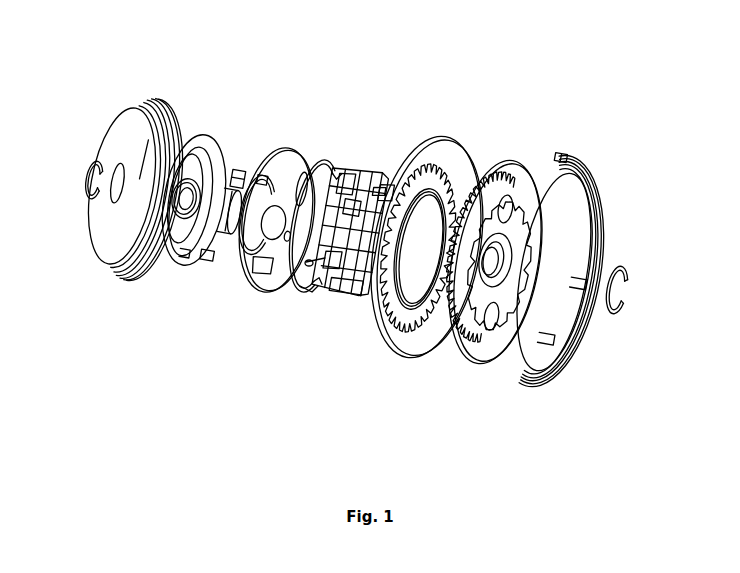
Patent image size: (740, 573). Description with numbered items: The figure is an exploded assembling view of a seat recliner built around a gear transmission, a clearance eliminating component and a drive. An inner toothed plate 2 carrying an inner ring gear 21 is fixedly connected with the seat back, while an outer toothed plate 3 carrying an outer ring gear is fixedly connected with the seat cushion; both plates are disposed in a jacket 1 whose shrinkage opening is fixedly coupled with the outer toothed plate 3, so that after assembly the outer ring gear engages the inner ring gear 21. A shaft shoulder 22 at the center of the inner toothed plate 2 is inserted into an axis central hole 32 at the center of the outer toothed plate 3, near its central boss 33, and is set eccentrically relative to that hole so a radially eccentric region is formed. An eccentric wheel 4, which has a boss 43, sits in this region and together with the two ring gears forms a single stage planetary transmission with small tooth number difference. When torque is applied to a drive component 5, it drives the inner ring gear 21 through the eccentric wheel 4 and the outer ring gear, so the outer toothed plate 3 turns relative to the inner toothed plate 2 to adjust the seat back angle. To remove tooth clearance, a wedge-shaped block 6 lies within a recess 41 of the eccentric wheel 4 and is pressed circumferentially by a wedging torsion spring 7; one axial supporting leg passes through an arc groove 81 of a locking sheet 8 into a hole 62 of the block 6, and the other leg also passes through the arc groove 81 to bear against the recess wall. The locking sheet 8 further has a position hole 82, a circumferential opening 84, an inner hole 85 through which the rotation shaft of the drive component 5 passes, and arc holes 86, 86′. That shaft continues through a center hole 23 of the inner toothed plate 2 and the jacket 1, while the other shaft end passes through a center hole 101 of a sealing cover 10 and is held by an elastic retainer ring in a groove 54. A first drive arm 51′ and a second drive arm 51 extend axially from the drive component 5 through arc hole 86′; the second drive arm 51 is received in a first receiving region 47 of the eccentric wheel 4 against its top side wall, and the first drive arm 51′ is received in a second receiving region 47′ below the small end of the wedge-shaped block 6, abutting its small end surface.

The jacket 1 is at (562, 160).
The inner toothed plate 2 is at (518, 258).
The outer toothed plate 3 is at (430, 342).
The eccentric wheel 4 is at (358, 290).
The drive component 5 is at (207, 263).
The wedge-shaped block 6 is at (350, 188).
The wedging torsion spring 7 is at (248, 268).
The locking sheet 8 is at (261, 183).
The sealing cover 10 is at (137, 173).
The center hole 101 is at (112, 188).
The inner ring gear 21 is at (510, 172).
The shaft shoulder 22 is at (531, 176).
The center hole 23 is at (482, 290).
The axis central hole 32 is at (404, 330).
The central boss 33 is at (404, 330).
The recess 41 is at (363, 188).
The boss 43 is at (370, 290).
The first receiving region 47 is at (344, 285).
The second receiving region 47′ is at (386, 192).
The second drive arm 51 is at (218, 262).
The first drive arm 51′ is at (231, 178).
The groove 54 is at (190, 258).
The hole 62 is at (338, 188).
The arc groove 81 is at (280, 185).
The position hole 82 is at (294, 282).
The circumferential opening 84 is at (305, 288).
The inner hole 85 is at (262, 183).
The arc hole 86 is at (298, 187).
The arc hole 86′ is at (275, 272).